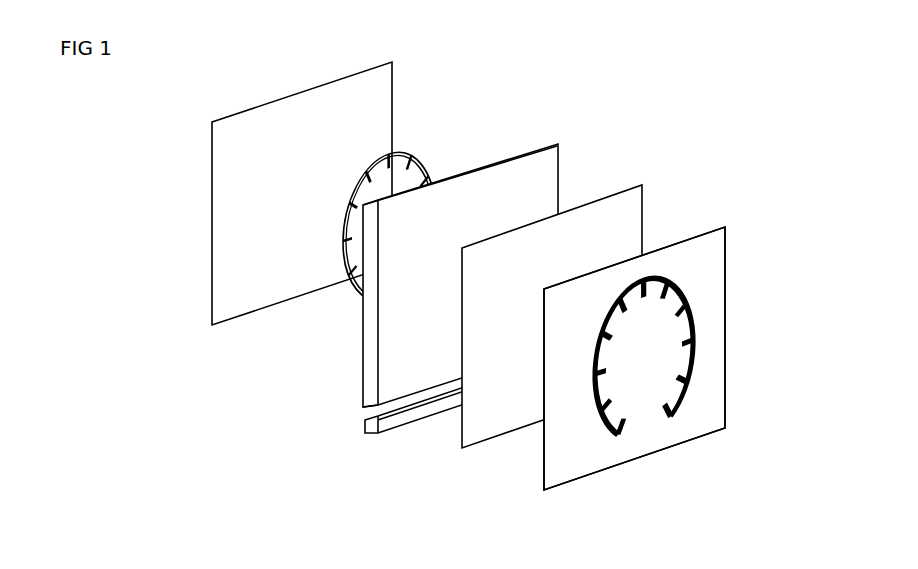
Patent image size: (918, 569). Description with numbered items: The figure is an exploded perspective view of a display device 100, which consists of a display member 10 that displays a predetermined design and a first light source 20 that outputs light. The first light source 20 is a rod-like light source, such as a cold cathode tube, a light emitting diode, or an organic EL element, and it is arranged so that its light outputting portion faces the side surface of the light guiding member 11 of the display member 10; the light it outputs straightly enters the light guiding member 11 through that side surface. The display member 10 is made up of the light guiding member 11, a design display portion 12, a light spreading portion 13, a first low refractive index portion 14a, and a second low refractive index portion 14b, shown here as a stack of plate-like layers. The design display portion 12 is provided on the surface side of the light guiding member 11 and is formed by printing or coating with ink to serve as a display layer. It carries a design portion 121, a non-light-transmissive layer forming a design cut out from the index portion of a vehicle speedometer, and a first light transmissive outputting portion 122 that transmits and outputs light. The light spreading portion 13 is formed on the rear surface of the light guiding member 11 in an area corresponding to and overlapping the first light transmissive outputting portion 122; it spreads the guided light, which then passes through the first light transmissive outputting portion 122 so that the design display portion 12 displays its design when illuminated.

The display device 100 is at (120, 268).
The display member 10 is at (243, 376).
The light guiding member 11 is at (530, 200).
The design display portion 12 is at (718, 317).
The light spreading portion 13 is at (420, 155).
The first low refractive index portion 14a is at (627, 227).
The second low refractive index portion 14b is at (225, 227).
The first light source 20 is at (365, 425).
The design portion 121 is at (708, 285).
The first light transmissive outputting portion 122 is at (687, 385).